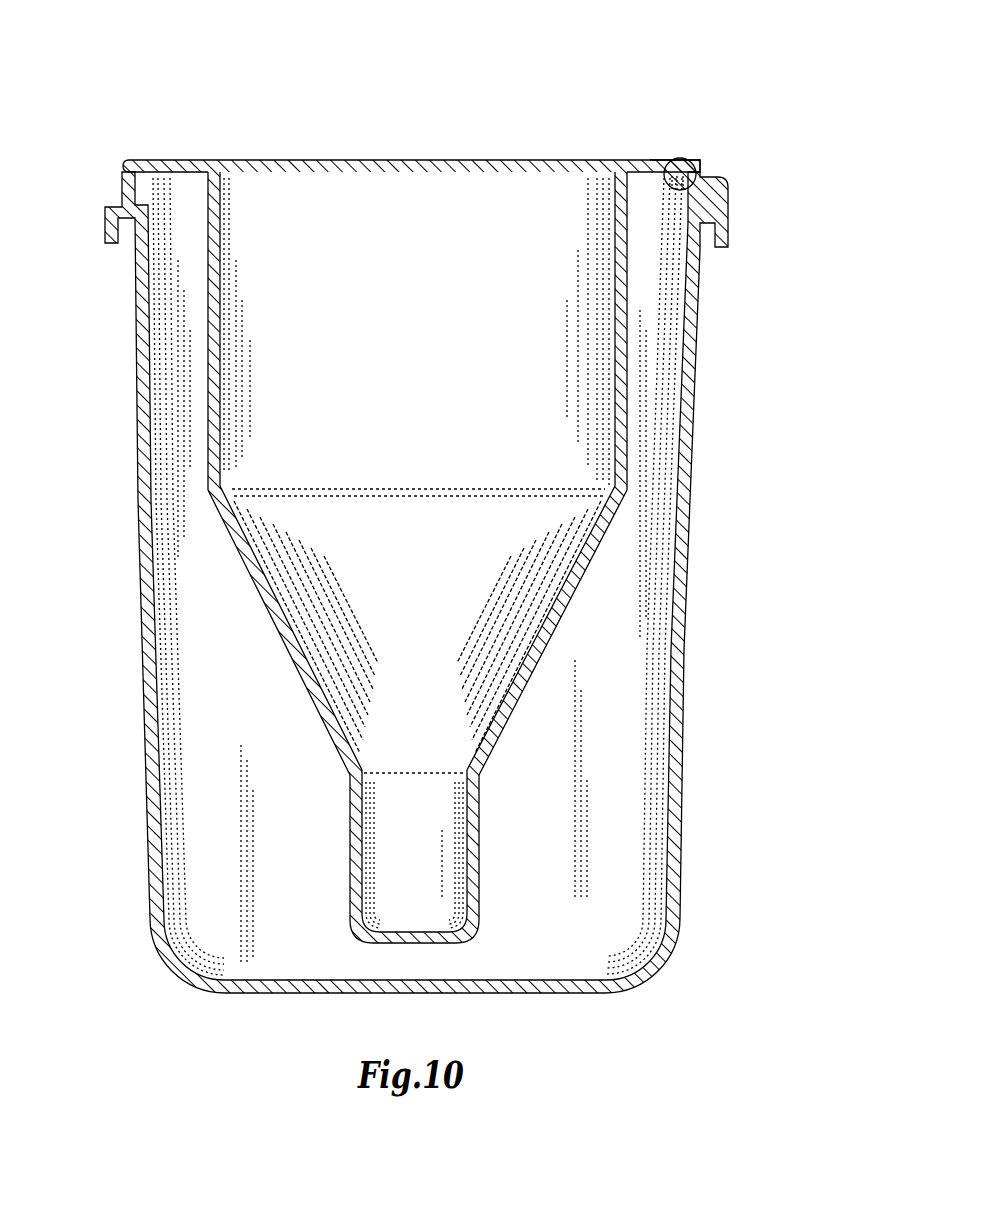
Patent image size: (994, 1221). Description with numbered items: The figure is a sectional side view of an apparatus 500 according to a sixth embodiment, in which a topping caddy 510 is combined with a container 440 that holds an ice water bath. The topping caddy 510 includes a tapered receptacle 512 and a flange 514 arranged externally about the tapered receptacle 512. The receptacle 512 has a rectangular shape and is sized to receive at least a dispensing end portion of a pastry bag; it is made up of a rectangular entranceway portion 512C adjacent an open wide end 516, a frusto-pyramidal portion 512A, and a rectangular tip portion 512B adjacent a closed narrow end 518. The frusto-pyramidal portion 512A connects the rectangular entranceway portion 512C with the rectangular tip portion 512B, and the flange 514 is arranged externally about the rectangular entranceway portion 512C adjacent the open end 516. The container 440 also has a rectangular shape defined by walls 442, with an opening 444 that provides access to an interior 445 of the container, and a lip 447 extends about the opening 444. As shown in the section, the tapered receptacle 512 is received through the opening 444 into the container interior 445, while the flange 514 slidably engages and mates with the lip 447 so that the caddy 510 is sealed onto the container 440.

The apparatus 500 is at (642, 67).
The container 440 is at (142, 575).
The walls 442 is at (146, 740).
The opening 444 is at (182, 192).
The interior 445 is at (290, 715).
The lip 447 is at (680, 153).
The topping caddy 510 is at (632, 384).
The tapered receptacle 512 is at (435, 566).
The frusto-pyramidal portion 512A is at (563, 650).
The rectangular tip portion 512B is at (488, 858).
The rectangular entranceway portion 512C is at (625, 275).
The flange 514 is at (650, 160).
The open wide end 516 is at (368, 158).
The closed narrow end 518 is at (416, 943).